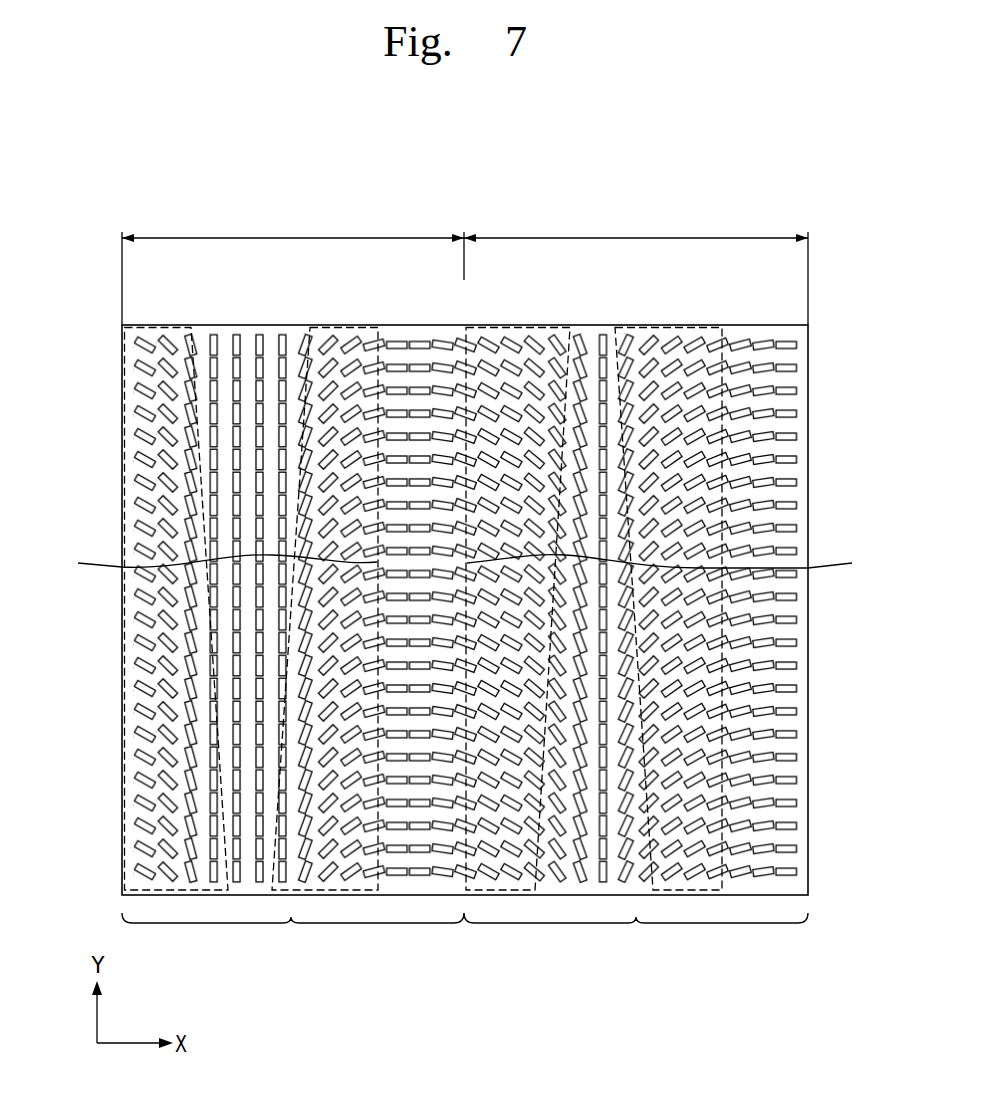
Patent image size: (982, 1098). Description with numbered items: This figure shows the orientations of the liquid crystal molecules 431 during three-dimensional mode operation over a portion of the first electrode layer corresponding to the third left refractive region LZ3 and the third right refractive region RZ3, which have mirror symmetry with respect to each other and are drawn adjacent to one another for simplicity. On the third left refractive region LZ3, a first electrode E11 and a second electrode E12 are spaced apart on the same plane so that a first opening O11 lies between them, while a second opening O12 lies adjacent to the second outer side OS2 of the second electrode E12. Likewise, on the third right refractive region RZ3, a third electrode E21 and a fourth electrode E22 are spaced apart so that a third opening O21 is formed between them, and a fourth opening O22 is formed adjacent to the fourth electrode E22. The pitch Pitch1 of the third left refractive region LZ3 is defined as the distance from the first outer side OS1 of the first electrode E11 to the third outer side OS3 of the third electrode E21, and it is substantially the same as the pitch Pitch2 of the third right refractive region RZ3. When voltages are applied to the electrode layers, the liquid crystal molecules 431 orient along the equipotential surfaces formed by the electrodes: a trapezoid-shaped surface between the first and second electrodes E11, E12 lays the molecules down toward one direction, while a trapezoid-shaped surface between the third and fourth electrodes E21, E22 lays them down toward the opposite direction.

The liquid crystal molecules 431 is at (508, 573).
The first outer side OS1 is at (122, 688).
The second outer side OS2 is at (207, 564).
The third outer side OS3 is at (679, 564).
The first electrode E11 is at (155, 325).
The first opening O11 is at (252, 331).
The second electrode E12 is at (344, 325).
The second opening O12 is at (425, 331).
The third electrode E21 is at (535, 325).
The third opening O21 is at (605, 331).
The fourth electrode E22 is at (683, 325).
The fourth opening O22 is at (768, 331).
The third left refractive region LZ3 is at (293, 934).
The third right refractive region RZ3 is at (636, 934).
The pitch of the third left refractive region Pitch1 is at (293, 268).
The pitch of the third right refractive region Pitch2 is at (636, 268).